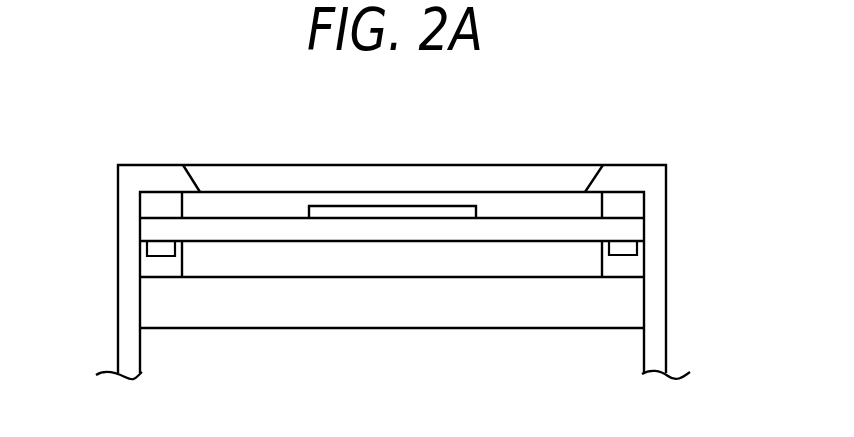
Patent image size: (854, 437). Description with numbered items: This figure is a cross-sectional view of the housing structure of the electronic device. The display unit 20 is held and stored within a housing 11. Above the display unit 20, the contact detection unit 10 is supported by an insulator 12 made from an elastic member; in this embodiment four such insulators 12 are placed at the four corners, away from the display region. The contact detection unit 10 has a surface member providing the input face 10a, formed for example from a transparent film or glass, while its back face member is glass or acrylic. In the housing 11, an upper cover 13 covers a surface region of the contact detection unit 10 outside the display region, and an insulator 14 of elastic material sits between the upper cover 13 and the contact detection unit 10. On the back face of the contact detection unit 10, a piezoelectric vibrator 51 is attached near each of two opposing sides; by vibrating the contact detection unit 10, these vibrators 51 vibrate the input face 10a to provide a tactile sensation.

The contact detection unit 10 is at (219, 235).
The input face 10a is at (272, 215).
The housing 11 is at (657, 310).
The insulator 12 is at (148, 265).
The upper cover 13 is at (614, 182).
The insulator 14 is at (633, 205).
The display unit 20 is at (172, 302).
The piezoelectric vibrator 51 is at (155, 248).